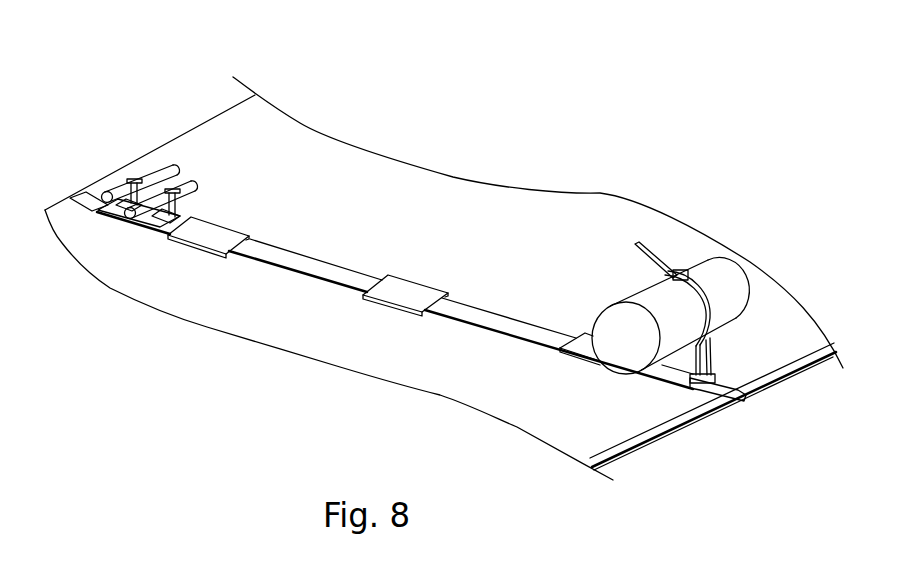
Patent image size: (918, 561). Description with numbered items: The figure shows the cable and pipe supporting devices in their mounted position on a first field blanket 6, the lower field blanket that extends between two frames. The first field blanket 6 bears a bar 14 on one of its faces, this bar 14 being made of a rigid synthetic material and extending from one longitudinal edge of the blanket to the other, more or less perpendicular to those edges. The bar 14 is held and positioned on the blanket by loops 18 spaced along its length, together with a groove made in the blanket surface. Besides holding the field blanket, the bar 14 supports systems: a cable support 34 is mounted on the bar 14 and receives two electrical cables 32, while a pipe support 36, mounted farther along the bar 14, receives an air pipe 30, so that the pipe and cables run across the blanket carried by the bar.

The first field blanket 6 is at (452, 185).
The bar 14 is at (315, 270).
The loops 18 is at (220, 233).
The air pipe 30 is at (723, 268).
The electrical cables 32 is at (173, 170).
The cable support 34 is at (127, 226).
The pipe support 36 is at (651, 386).